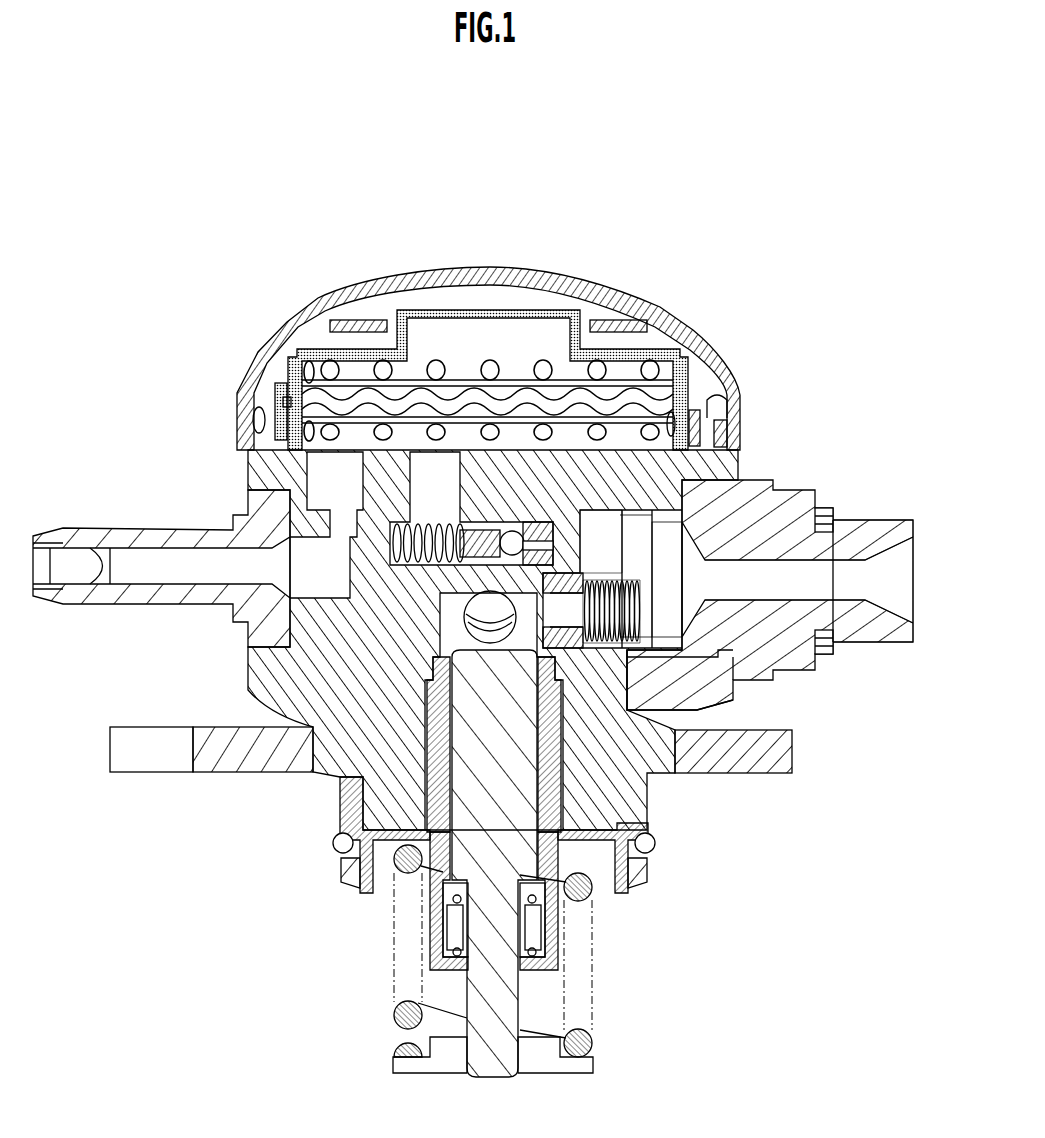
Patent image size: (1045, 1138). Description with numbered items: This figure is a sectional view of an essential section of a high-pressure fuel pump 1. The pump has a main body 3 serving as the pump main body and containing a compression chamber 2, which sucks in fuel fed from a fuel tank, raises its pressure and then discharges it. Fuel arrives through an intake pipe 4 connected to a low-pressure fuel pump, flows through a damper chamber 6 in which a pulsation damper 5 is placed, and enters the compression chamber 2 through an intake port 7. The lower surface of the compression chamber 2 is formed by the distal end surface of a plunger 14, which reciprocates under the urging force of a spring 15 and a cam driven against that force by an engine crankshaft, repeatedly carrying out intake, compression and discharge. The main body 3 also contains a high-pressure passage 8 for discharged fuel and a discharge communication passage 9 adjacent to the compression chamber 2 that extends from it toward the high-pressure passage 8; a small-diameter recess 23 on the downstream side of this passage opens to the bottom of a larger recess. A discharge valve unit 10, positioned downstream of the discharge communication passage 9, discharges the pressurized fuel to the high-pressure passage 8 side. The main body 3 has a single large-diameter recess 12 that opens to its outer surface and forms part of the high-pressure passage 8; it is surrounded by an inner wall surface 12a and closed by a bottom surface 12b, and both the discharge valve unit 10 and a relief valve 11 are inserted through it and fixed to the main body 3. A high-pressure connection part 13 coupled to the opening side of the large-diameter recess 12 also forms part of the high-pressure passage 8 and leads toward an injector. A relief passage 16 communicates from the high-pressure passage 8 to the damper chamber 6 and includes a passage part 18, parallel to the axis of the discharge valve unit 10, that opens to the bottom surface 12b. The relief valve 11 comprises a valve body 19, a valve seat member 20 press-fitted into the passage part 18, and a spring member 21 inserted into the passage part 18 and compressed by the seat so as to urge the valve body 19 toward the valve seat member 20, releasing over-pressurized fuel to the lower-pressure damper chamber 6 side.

The high-pressure fuel pump 1 is at (240, 165).
The compression chamber 2 is at (300, 718).
The main body 3 is at (340, 790).
The intake pipe 4 is at (150, 530).
The pulsation damper 5 is at (422, 468).
The damper chamber 6 is at (583, 440).
The intake port 7 is at (462, 607).
The high-pressure passage 8 is at (845, 583).
The discharge communication passage 9 is at (733, 687).
The discharge valve unit 10 is at (810, 500).
The relief valve 11 is at (510, 366).
The large-diameter recess 12 is at (688, 530).
The inner wall surface 12a is at (613, 560).
The bottom surface 12b is at (588, 505).
The high-pressure connection part 13 is at (870, 528).
The plunger 14 is at (507, 990).
The spring 15 is at (597, 1047).
The relief passage 16 is at (356, 350).
The passage part 18 is at (720, 470).
The valve body 19 is at (514, 532).
The valve seat member 20 is at (540, 545).
The spring member 21 is at (468, 540).
The small-diameter recess 23 is at (700, 722).